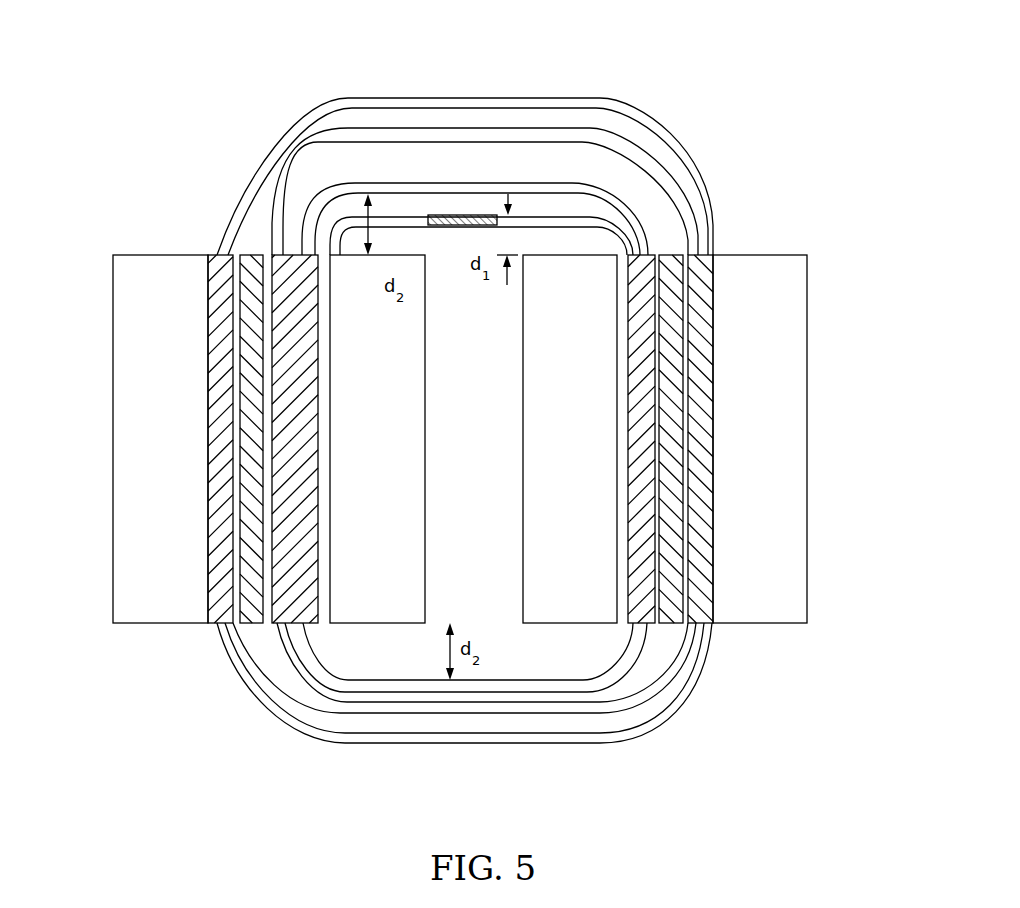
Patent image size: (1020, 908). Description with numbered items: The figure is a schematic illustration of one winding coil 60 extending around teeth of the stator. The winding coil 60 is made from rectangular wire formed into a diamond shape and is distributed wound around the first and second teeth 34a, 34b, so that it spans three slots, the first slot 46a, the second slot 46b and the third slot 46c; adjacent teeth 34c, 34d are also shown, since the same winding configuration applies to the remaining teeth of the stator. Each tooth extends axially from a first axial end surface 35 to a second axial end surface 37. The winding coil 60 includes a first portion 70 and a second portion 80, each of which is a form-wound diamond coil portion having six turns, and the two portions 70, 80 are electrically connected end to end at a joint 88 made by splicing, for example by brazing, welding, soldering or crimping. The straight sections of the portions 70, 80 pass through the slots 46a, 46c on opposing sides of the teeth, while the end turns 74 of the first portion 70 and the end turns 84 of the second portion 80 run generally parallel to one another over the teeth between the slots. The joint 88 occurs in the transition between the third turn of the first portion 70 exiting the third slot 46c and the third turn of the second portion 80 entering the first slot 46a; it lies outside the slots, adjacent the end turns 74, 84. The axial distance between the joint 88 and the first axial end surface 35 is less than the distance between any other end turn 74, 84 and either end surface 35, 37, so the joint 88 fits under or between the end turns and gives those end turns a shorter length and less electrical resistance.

The winding coil 60 is at (740, 62).
The first tooth 34a is at (130, 440).
The second tooth 34b is at (385, 598).
The third tooth 34c is at (593, 600).
The fourth tooth 34d is at (780, 440).
The first axial end surface 35 is at (403, 247).
The second axial end surface 37 is at (545, 600).
The first slot 46a is at (320, 610).
The second slot 46b is at (523, 300).
The third slot 46c is at (648, 247).
The first portion 70 is at (272, 568).
The second portion 80 is at (210, 308).
The end turns 74 is at (538, 215).
The end turns 84 is at (337, 207).
The joint 88 is at (472, 213).